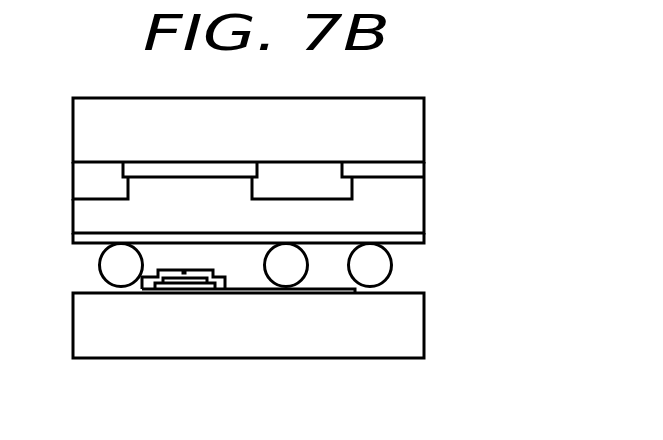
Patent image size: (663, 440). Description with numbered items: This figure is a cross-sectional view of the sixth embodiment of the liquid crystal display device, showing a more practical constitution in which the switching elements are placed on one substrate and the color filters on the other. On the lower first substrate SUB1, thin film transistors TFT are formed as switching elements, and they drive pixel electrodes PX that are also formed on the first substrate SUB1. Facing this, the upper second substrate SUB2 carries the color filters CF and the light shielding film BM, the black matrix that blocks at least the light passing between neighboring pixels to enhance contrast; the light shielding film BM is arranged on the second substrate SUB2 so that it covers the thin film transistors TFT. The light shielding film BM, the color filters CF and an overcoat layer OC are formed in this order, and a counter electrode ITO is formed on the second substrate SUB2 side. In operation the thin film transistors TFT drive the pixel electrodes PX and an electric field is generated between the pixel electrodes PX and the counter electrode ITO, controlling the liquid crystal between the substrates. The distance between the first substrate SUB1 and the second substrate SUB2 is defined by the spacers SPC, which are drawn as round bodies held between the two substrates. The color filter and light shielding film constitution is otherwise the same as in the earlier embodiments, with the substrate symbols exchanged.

The second substrate SUB2 is at (417, 118).
The light shielding film BM is at (417, 170).
The color filters CF is at (352, 188).
The overcoat layer OC is at (408, 225).
The counter electrode ITO is at (425, 243).
The spacers SPC is at (385, 269).
The first substrate SUB1 is at (100, 342).
The thin film transistors TFT is at (182, 305).
The pixel electrodes PX is at (257, 293).